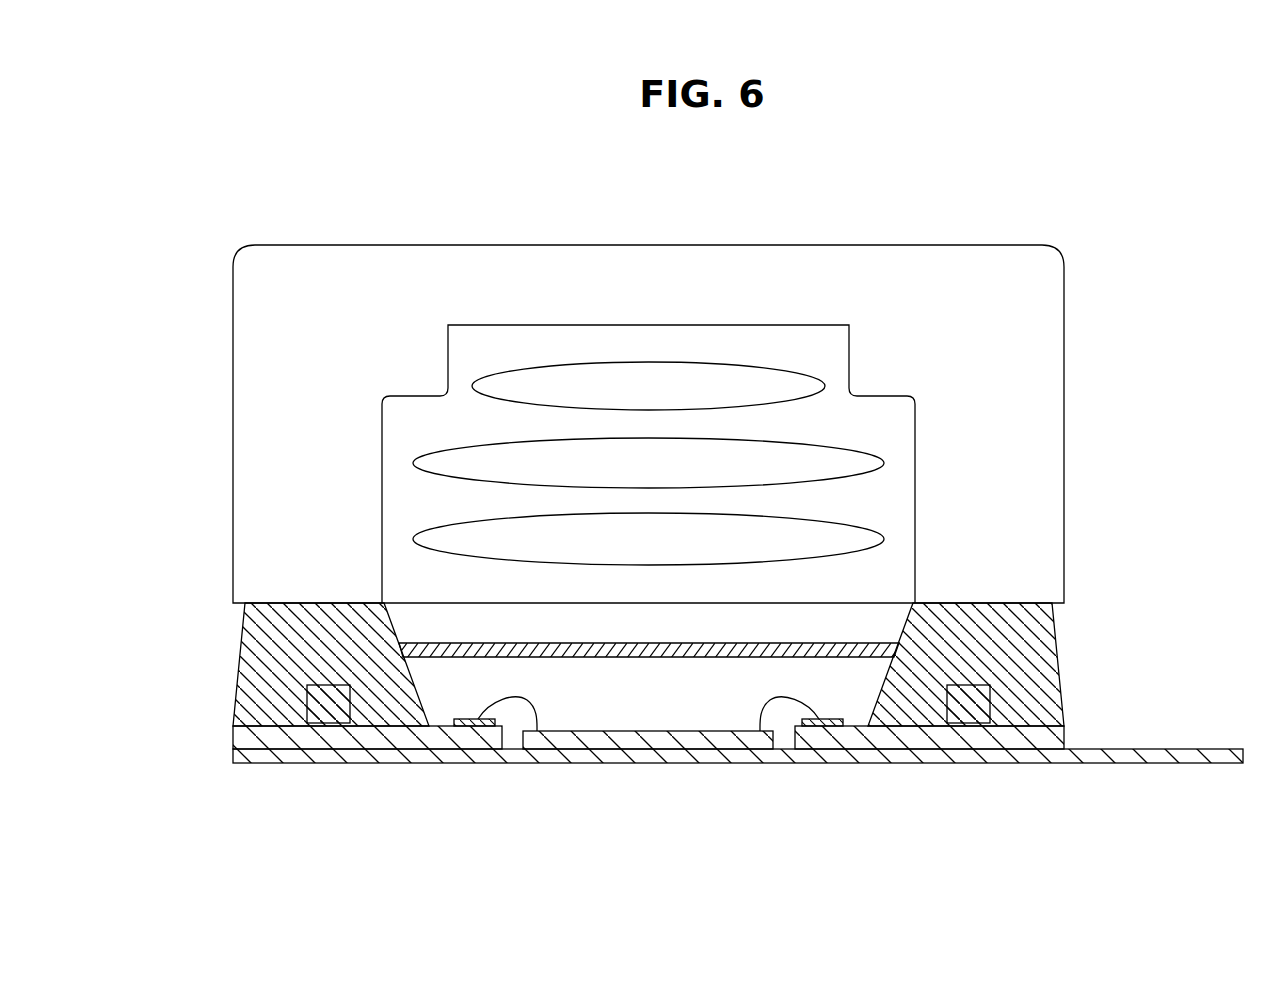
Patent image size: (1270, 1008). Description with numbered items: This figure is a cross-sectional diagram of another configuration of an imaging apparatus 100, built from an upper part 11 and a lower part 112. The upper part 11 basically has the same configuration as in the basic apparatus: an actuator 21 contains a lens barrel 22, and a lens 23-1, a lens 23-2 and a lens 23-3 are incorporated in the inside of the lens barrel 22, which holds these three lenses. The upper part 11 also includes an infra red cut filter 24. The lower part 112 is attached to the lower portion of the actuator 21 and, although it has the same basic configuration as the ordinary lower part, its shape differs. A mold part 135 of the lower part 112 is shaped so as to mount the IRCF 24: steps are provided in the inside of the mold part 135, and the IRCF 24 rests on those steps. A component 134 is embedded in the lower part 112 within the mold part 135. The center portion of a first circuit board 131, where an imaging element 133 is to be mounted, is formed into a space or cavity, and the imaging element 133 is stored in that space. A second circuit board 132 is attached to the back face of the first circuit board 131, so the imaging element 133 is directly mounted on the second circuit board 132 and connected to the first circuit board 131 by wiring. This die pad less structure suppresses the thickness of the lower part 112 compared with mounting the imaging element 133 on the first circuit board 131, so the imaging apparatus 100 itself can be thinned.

The imaging apparatus 100 is at (594, 245).
The upper part 11 is at (221, 245).
The actuator 21 is at (1040, 307).
The lens barrel 22 is at (745, 325).
The lens 23-1 is at (825, 363).
The lens 23-2 is at (873, 437).
The lens 23-3 is at (873, 512).
The lower part 112 is at (221, 608).
The mold part 135 is at (270, 703).
The component 134 is at (328, 705).
The infra red cut filter (IRCF) 24 is at (563, 650).
The first circuit board 131 is at (428, 738).
The imaging element 133 is at (648, 740).
The second circuit board 132 is at (1163, 757).